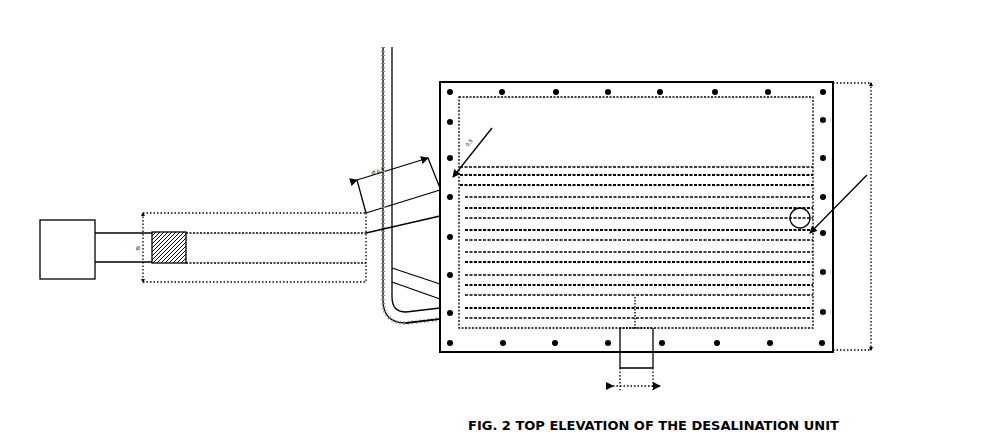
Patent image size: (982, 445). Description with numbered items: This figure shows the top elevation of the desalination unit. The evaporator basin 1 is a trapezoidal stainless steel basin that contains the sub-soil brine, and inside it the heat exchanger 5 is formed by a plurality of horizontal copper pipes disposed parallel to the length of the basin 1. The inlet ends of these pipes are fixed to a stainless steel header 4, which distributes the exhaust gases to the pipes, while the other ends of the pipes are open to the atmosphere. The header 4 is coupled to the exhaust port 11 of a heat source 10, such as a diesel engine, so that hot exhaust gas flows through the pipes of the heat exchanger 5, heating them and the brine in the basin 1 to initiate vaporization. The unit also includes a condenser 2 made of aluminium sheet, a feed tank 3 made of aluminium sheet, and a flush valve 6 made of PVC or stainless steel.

The evaporator basin 1 is at (439, 306).
The condenser 2 is at (512, 105).
The feed tank 3 is at (656, 360).
The header 4 is at (372, 287).
The heat exchanger 5 is at (718, 298).
The flush valve 6 is at (837, 263).
The heat source 10 is at (63, 286).
The exhaust port 11 is at (110, 265).